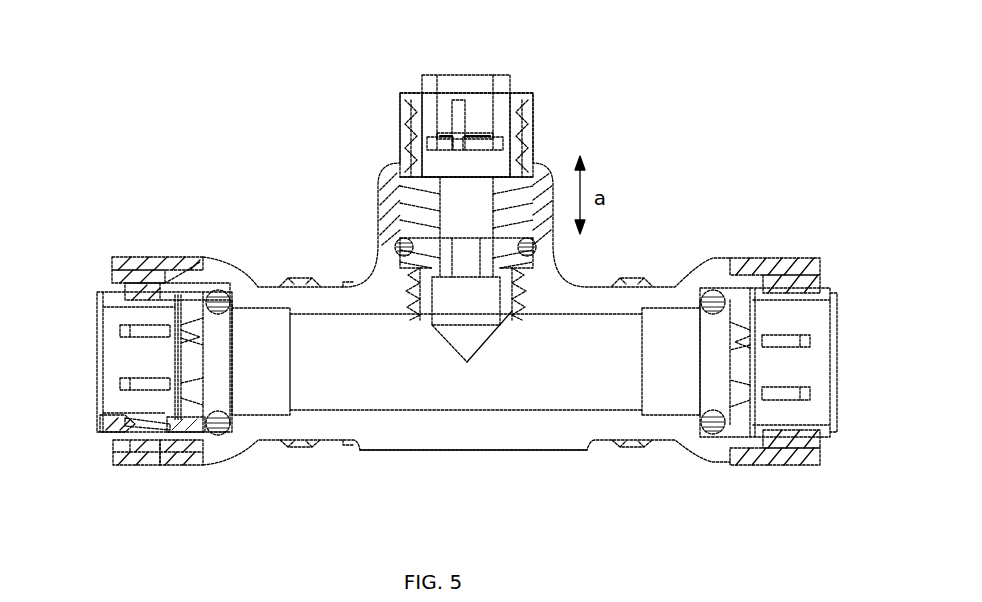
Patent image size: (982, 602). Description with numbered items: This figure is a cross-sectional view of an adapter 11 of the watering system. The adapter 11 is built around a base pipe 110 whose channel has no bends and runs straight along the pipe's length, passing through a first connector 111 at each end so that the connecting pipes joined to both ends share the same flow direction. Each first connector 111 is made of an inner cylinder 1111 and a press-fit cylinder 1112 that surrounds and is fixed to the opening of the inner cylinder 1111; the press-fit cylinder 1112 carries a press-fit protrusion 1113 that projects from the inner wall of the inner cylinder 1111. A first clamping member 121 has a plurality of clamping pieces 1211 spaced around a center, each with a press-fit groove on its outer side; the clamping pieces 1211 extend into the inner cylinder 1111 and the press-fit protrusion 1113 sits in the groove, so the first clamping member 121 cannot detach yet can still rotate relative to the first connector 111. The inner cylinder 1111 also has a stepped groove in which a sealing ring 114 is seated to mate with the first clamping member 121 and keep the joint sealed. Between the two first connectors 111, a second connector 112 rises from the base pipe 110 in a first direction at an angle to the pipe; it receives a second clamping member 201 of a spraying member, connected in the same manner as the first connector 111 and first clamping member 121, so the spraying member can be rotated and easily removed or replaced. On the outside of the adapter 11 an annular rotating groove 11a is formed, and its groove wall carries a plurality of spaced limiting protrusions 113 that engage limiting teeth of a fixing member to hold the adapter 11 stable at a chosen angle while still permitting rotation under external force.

The adapter 11 is at (445, 463).
The base pipe 110 is at (518, 452).
The first connector 111 is at (185, 265).
The inner cylinder 1111 is at (172, 445).
The press-fit cylinder 1112 is at (130, 455).
The press-fit protrusion 1113 is at (130, 427).
The second connector 112 is at (400, 118).
The limiting protrusion 113 is at (283, 453).
The sealing ring 114 is at (220, 436).
The annular rotating groove 11a is at (328, 447).
The first clamping member 121 is at (100, 305).
The clamping piece 1211 is at (168, 352).
The second clamping member 201 is at (430, 77).